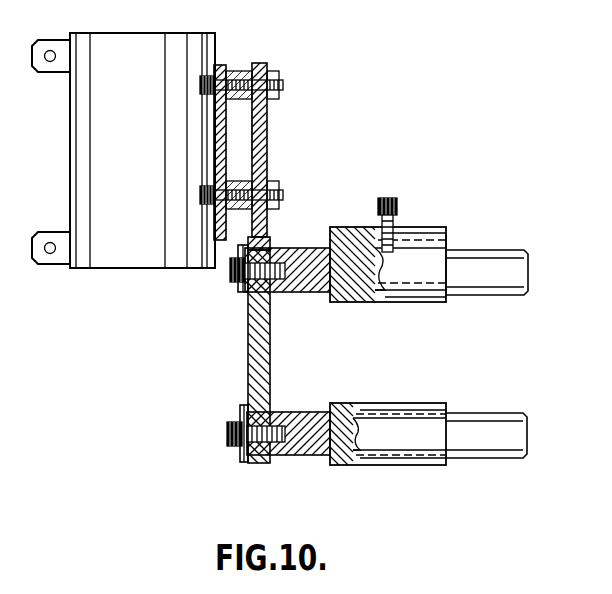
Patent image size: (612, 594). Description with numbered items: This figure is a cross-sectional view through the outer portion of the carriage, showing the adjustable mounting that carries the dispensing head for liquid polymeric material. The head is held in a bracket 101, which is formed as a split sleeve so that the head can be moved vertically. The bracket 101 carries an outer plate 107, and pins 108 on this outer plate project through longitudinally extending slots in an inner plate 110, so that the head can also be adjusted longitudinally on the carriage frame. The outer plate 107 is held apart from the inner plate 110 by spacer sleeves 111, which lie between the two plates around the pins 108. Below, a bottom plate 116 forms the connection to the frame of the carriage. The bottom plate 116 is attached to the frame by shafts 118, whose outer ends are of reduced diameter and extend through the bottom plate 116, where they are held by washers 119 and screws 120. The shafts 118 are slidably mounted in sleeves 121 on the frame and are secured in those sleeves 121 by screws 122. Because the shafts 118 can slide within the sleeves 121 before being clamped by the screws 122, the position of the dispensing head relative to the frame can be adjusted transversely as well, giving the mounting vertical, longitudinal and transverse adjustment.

The bracket 101 is at (144, 167).
The outer plate 107 is at (224, 66).
The pins 108 is at (200, 84).
The inner plate 110 is at (264, 64).
The spacer sleeves 111 is at (262, 118).
The bottom plate 116 is at (252, 349).
The shafts 118 is at (300, 249).
The washers 119 is at (243, 290).
The screws 120 is at (228, 281).
The sleeves 121 is at (385, 303).
The screws 122 is at (424, 187).